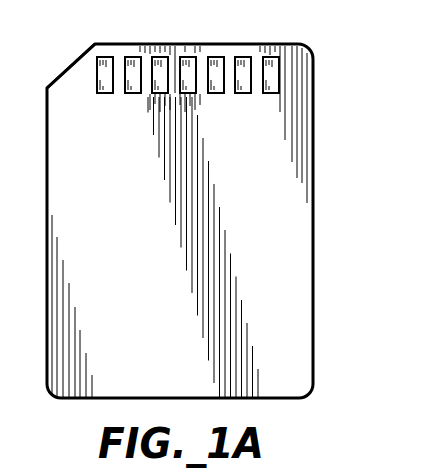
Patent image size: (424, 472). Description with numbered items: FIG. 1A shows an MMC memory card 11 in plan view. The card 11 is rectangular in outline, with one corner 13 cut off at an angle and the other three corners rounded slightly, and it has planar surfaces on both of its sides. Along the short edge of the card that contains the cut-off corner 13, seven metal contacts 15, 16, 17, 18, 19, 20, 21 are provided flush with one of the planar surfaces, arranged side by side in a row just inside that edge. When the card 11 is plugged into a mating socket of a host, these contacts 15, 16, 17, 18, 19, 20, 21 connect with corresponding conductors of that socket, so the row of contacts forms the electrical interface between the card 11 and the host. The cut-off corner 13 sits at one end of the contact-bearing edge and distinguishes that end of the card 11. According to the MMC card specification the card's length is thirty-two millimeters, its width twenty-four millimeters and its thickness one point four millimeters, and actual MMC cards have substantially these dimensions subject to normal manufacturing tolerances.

The MMC memory card 11 is at (339, 305).
The cut-off corner 13 is at (61, 73).
The metal contact 15 is at (100, 58).
The metal contact 16 is at (135, 62).
The metal contact 17 is at (165, 60).
The metal contact 18 is at (183, 60).
The metal contact 19 is at (211, 62).
The metal contact 20 is at (244, 62).
The metal contact 21 is at (275, 65).